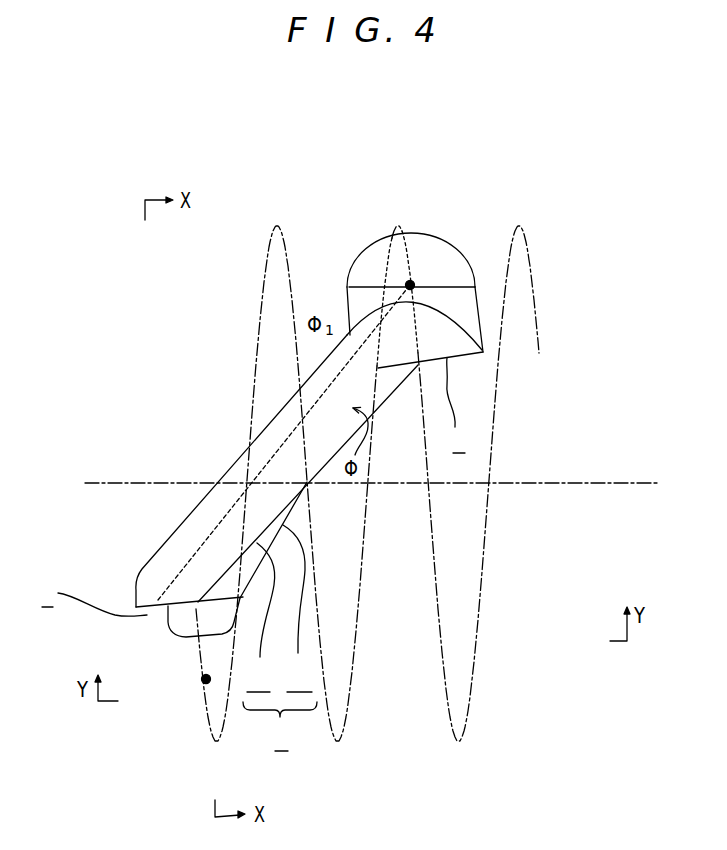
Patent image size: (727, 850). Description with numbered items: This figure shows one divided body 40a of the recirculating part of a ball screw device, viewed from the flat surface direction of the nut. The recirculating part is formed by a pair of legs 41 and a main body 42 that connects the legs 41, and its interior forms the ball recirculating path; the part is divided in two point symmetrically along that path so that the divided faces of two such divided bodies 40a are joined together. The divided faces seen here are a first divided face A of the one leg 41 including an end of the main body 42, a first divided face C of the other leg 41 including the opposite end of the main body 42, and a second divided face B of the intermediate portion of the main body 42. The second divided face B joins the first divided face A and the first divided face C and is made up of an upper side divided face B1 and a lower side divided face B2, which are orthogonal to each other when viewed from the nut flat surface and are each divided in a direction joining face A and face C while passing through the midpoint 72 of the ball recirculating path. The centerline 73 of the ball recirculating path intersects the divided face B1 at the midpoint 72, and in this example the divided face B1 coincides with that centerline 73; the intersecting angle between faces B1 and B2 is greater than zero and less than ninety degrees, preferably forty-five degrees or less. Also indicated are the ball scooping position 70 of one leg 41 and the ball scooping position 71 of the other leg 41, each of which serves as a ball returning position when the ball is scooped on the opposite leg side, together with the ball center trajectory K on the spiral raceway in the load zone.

The divided body 40a is at (178, 528).
The leg 41 is at (463, 259).
The main body 42 is at (238, 460).
The ball scooping position 70 is at (206, 679).
The ball scooping position 71 is at (410, 285).
The midpoint of the ball recirculating path 72 is at (307, 480).
The centerline of the ball recirculating path 73 is at (388, 397).
The ball center trajectory K is at (261, 313).
The first divided face A is at (94, 599).
The second divided face B is at (280, 727).
The upper side divided face B1 is at (261, 617).
The lower side divided face B2 is at (297, 608).
The first divided face C is at (456, 406).